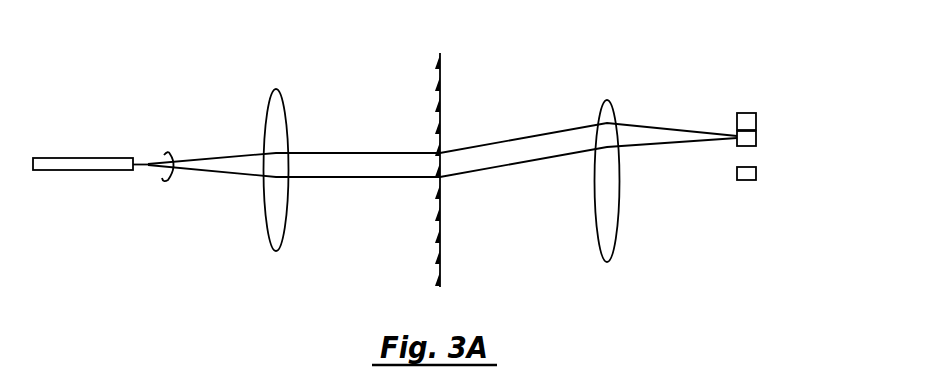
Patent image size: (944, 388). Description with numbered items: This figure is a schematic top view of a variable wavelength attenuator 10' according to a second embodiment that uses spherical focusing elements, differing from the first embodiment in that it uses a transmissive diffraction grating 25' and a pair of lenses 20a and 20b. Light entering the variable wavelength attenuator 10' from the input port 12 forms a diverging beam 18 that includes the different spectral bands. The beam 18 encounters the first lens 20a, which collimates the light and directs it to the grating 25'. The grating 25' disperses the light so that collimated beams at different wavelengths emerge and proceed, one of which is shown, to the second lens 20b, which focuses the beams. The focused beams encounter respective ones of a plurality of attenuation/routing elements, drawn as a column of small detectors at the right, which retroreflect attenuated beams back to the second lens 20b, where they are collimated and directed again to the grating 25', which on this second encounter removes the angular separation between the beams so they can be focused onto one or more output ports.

The variable wavelength attenuator 10' is at (435, 200).
The input port 12 is at (127, 158).
The diverging beam 18 is at (172, 151).
The first lens 20a is at (288, 126).
The second lens 20b is at (612, 110).
The transmissive diffraction grating 25' is at (478, 152).